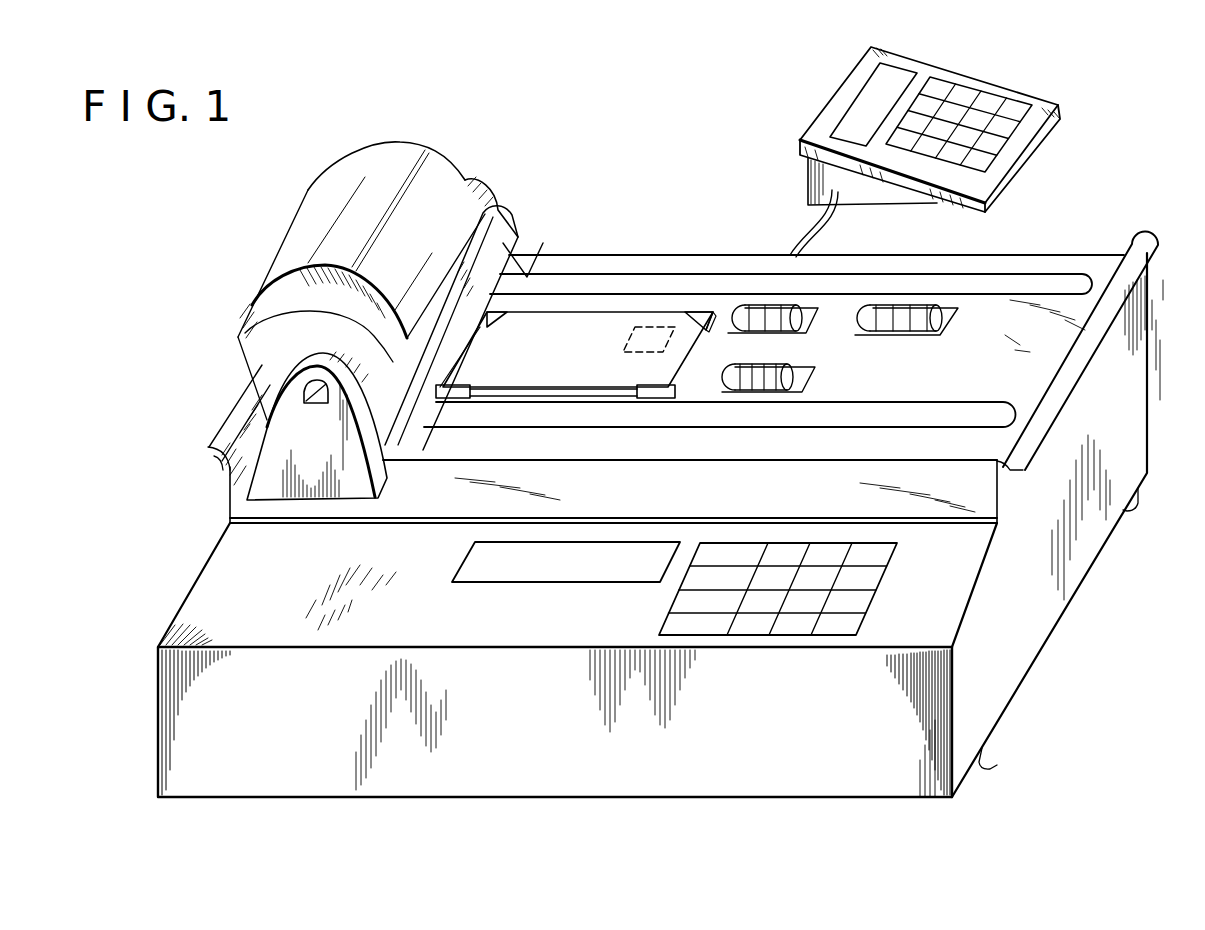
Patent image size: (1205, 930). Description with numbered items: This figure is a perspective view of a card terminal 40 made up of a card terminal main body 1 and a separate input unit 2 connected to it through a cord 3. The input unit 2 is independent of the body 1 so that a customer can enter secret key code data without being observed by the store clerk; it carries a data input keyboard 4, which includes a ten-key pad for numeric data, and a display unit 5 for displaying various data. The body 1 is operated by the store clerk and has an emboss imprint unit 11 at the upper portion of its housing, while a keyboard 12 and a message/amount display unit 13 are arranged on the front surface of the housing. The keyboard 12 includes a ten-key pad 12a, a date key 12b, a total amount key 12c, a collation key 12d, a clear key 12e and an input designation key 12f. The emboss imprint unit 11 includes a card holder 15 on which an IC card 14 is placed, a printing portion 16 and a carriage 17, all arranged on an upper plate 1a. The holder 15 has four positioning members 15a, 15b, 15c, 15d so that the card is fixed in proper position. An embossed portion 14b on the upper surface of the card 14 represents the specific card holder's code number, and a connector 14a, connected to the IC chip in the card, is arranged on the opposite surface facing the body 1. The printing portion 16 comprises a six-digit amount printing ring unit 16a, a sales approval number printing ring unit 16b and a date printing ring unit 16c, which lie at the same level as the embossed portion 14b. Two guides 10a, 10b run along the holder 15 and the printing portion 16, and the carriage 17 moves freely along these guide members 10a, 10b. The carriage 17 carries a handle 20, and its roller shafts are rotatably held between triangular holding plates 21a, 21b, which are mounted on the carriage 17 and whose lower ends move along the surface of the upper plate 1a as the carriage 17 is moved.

The card terminal main body 1 is at (1030, 654).
The upper plate 1a is at (392, 510).
The input unit 2 is at (1059, 106).
The cord 3 is at (812, 232).
The data input keyboard 4 is at (993, 96).
The display unit 5 is at (867, 100).
The guide 10a is at (950, 413).
The guide 10b is at (1031, 279).
The emboss imprint unit 11 is at (1043, 358).
The keyboard 12 is at (793, 637).
The ten-key pad 12a is at (875, 577).
The date key 12b is at (719, 542).
The total amount key 12c is at (683, 585).
The collation key 12d is at (678, 605).
The clear key 12e is at (745, 637).
The input designation key 12f is at (847, 634).
The message/amount display unit 13 is at (512, 576).
The IC card 14 is at (583, 316).
The connector 14a is at (651, 326).
The embossed portion 14b is at (507, 378).
The card holder 15 is at (550, 399).
The positioning member 15a is at (497, 313).
The positioning member 15b is at (703, 330).
The positioning member 15c is at (663, 398).
The positioning member 15d is at (443, 398).
The printing portion 16 is at (850, 303).
The 6-digit amount printing ring unit 16a is at (803, 375).
The sales approval number (SAN) printing ring unit 16b is at (806, 330).
The date printing ring unit 16c is at (918, 328).
The carriage 17 is at (423, 146).
The handle 20 is at (314, 218).
The holding plate 21a is at (280, 430).
The holding plate 21b is at (486, 188).
The card terminal 40 is at (1088, 588).